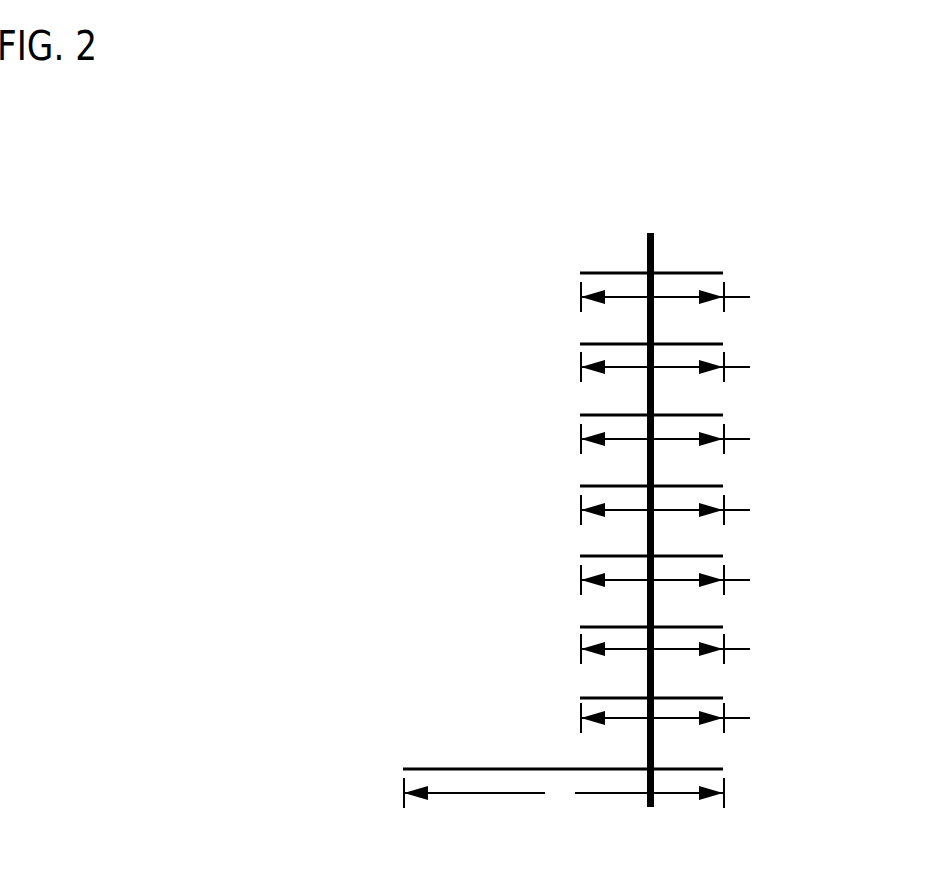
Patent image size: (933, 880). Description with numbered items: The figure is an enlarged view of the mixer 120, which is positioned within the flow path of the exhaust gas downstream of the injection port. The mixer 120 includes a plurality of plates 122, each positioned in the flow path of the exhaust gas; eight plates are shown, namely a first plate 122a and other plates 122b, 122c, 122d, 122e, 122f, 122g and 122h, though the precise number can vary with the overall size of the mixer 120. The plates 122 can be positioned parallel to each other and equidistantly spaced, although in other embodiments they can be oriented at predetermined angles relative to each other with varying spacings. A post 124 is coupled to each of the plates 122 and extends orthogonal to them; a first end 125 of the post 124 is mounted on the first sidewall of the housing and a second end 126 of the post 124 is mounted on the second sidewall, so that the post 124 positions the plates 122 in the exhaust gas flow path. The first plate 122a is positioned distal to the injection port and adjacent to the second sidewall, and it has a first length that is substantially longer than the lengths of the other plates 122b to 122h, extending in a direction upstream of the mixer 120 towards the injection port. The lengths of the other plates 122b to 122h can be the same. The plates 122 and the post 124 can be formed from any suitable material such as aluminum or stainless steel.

The mixer 120 is at (651, 499).
The plurality of plates 122 is at (651, 512).
The first plate 122a is at (432, 768).
The second plate 122b is at (583, 697).
The third plate 122c is at (597, 626).
The fourth plate 122d is at (597, 555).
The fifth plate 122e is at (597, 485).
The sixth plate 122f is at (597, 414).
The seventh plate 122g is at (597, 343).
The eighth plate 122h is at (597, 272).
The post 124 is at (655, 748).
The first end 125 is at (648, 234).
The second end 126 is at (653, 803).